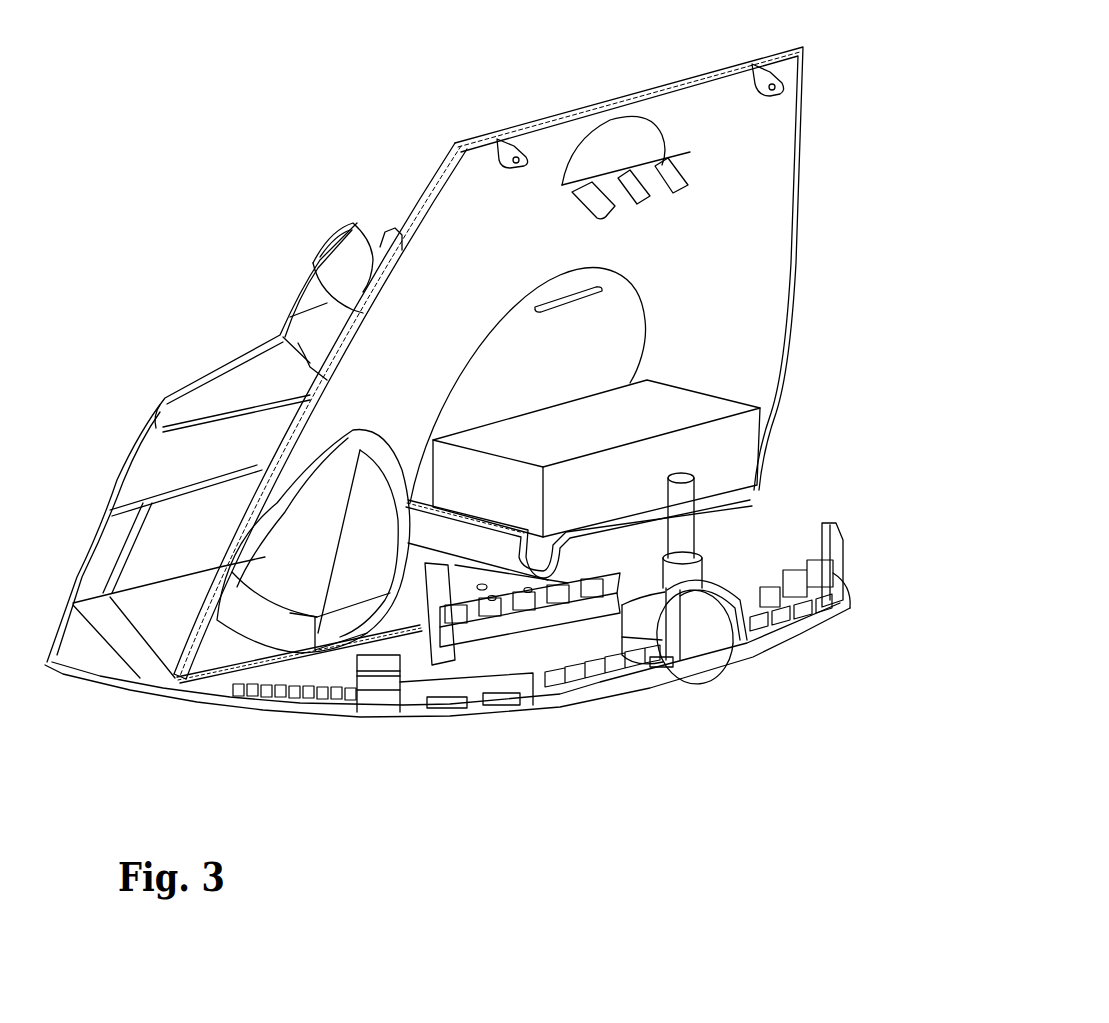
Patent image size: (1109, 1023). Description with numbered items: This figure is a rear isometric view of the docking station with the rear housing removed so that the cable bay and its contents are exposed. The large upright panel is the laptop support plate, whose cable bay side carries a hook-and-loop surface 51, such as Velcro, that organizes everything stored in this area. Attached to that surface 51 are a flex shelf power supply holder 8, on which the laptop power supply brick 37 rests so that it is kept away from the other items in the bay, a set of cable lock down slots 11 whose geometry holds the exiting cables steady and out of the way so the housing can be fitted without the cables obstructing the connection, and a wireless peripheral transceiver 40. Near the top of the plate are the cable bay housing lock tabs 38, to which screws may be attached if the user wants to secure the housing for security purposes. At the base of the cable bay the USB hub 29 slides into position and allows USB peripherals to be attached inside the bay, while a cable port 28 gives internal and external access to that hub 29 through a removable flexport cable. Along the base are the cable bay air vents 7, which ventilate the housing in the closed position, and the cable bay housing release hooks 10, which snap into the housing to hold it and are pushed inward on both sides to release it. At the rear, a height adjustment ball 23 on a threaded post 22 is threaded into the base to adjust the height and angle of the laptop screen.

The hook-and-loop surface 51 is at (767, 259).
The cable bay housing lock tabs 38 is at (526, 160).
The cable lock down slots 11 is at (632, 150).
The flex shelf power supply holder 8 is at (540, 355).
The laptop power supply brick 37 is at (603, 477).
The threaded post 22 is at (683, 520).
The height adjustment ball 23 is at (713, 663).
The cable bay housing release hooks 10 is at (843, 543).
The cable bay air vents 7 is at (288, 697).
The cable port 28 is at (453, 702).
The USB hub 29 is at (495, 637).
The wireless peripheral transceiver 40 is at (305, 545).